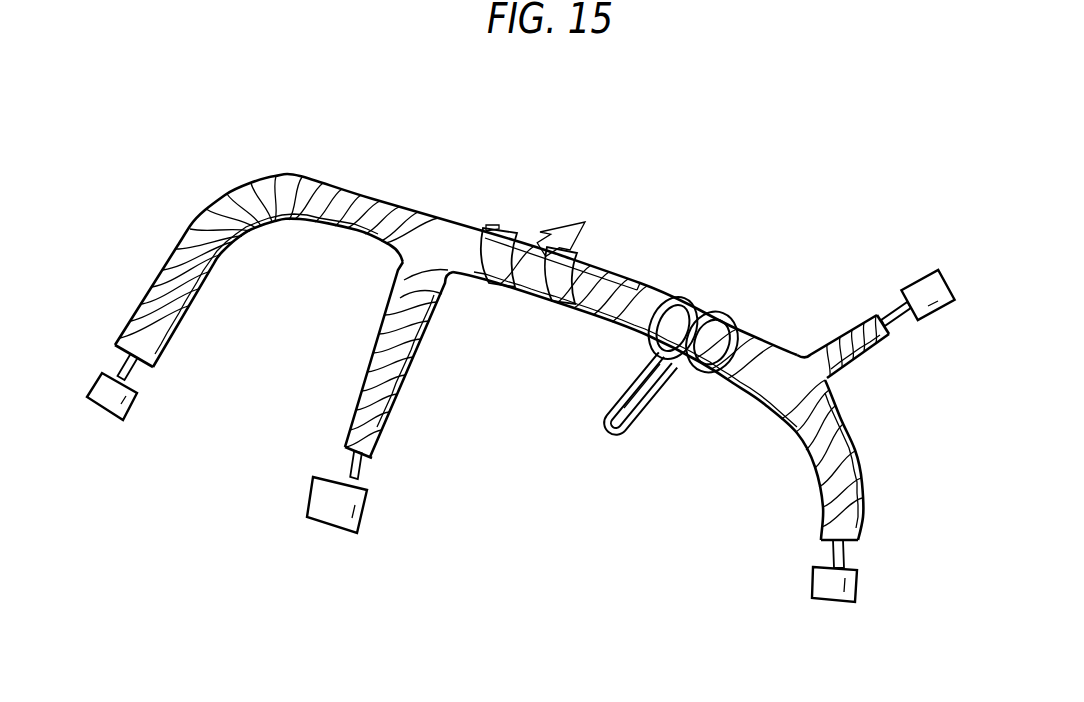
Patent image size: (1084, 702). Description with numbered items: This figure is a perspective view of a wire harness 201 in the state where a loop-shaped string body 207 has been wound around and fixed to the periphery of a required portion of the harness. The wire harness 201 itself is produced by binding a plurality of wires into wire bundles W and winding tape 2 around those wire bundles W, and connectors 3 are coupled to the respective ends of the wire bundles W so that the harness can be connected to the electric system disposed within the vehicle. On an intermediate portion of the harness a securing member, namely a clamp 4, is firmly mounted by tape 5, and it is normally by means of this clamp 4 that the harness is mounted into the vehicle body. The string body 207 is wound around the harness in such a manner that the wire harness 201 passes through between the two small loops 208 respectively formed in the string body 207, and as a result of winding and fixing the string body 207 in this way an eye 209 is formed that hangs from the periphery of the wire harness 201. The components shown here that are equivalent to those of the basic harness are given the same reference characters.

The wire harness 201 is at (457, 170).
The tape 2 is at (322, 183).
The connectors 3 is at (125, 416).
The wire bundles W is at (135, 372).
The clamp 4 is at (568, 215).
The tape 5 is at (486, 283).
The string body 207 is at (600, 432).
The small loops 208 is at (678, 305).
The eye 209 is at (636, 412).